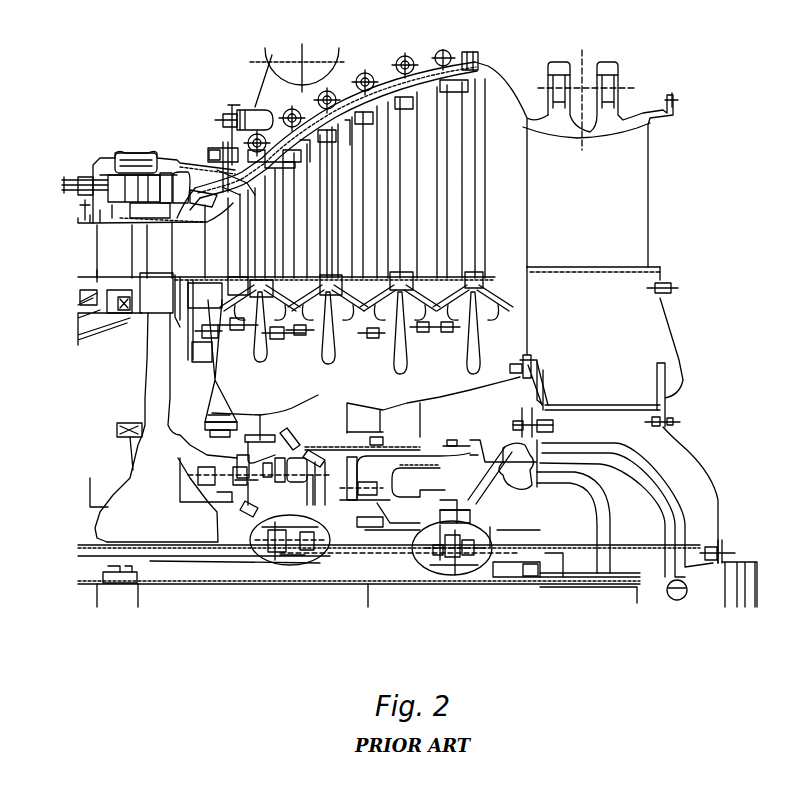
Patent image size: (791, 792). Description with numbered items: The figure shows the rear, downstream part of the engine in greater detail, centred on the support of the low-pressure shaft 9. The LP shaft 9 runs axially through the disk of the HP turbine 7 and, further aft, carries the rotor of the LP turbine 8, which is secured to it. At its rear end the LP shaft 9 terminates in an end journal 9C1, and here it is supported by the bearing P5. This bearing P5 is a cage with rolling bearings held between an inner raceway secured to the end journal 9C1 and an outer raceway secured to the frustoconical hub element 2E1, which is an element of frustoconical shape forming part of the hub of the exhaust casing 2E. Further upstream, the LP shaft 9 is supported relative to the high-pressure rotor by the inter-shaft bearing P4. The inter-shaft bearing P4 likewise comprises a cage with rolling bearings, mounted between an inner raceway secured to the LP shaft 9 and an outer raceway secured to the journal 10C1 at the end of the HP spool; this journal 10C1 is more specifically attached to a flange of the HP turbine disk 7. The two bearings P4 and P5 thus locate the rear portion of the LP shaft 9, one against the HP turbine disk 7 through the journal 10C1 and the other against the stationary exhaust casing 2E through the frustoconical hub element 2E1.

The HP turbine disk 7 is at (170, 516).
The LP turbine 8 is at (378, 208).
The LP shaft 9 is at (233, 555).
The end journal of the LP shaft 9C1 is at (424, 565).
The journal at the end of the HP spool 10C1 is at (237, 535).
The inter-shaft bearing P4 is at (295, 505).
The bearing P5 is at (452, 505).
The exhaust casing 2E is at (635, 393).
The frustoconical hub element 2E1 is at (490, 493).